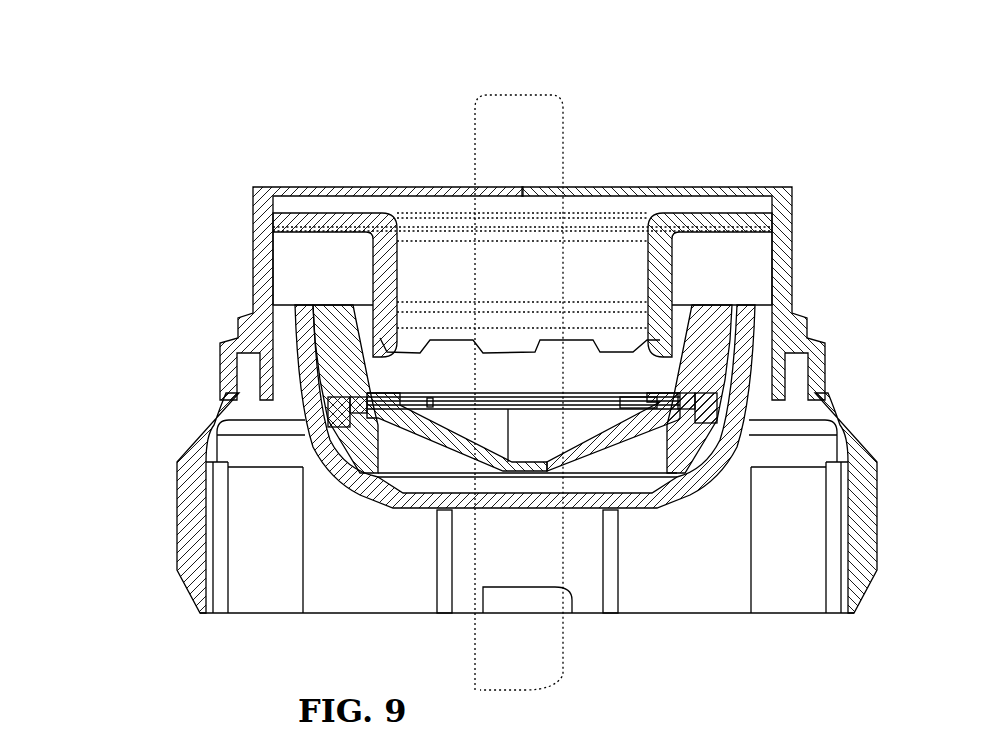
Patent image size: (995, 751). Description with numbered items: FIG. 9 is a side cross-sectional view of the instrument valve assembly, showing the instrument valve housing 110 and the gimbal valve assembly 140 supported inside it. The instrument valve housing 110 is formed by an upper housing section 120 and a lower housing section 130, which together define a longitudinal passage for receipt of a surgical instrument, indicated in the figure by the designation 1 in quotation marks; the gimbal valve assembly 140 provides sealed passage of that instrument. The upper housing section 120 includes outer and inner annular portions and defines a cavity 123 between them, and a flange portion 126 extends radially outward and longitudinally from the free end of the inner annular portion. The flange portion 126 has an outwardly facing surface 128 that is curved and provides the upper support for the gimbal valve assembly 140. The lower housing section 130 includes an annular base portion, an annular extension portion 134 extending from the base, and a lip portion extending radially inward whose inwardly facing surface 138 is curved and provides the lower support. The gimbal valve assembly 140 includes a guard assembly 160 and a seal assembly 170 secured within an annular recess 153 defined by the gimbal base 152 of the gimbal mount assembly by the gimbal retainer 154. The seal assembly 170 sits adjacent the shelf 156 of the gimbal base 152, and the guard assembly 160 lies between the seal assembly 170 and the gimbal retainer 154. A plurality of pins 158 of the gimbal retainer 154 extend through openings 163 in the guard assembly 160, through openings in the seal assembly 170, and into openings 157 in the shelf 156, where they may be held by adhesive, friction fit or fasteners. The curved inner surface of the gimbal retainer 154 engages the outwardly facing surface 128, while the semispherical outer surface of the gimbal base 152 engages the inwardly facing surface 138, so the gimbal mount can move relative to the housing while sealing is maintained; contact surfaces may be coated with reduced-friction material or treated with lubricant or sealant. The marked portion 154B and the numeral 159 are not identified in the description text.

The instrument valve housing 110 is at (80, 240).
The upper housing section 120 is at (803, 226).
The cavity 123 is at (748, 210).
The flange portion 126 is at (380, 213).
The outwardly facing surface 128 is at (300, 322).
The lower housing section 130 is at (183, 445).
The annular extension portion 134 is at (235, 480).
The inwardly facing surface 138 is at (395, 350).
The gimbal valve assembly 140 is at (795, 283).
The gimbal base 152 is at (405, 440).
The annular recess 153 is at (212, 470).
The gimbal retainer 154 is at (304, 205).
The plate portion 154B is at (530, 160).
The shelf 156 is at (835, 335).
The openings 157 is at (375, 440).
The pins 158 is at (320, 470).
The seal 159 is at (361, 440).
The guard assembly 160 is at (654, 235).
The openings 163 is at (808, 312).
The seal assembly 170 is at (657, 493).
The first position 1 is at (563, 152).